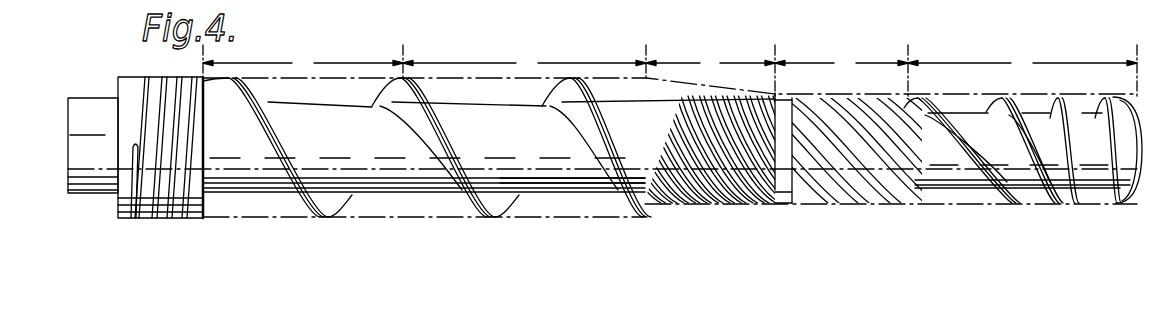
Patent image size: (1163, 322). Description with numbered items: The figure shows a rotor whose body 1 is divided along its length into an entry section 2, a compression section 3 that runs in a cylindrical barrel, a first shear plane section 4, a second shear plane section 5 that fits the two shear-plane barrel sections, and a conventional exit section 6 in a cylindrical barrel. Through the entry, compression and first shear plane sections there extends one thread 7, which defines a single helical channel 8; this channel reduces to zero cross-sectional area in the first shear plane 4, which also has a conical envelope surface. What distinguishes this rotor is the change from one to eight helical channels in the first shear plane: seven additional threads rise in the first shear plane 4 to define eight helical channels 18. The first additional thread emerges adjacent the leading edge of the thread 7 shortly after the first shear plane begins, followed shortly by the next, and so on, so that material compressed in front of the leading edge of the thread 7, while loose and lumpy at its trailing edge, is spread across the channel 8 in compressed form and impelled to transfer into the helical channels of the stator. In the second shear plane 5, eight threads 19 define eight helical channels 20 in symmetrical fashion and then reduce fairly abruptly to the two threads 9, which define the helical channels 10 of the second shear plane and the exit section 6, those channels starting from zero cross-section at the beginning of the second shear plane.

The body 1 is at (329, 144).
The entry section 2 is at (303, 134).
The compression section 3 is at (527, 134).
The first shear plane section 4 is at (719, 127).
The second shear plane section 5 is at (815, 127).
The exit section 6 is at (1020, 127).
The thread 7 is at (440, 131).
The helical channel 8 is at (582, 207).
The threads 9 is at (1038, 130).
The helical channels 10 is at (1097, 102).
The helical channels 18 is at (768, 208).
The threads 19 is at (915, 98).
The helical channels 20 is at (900, 206).